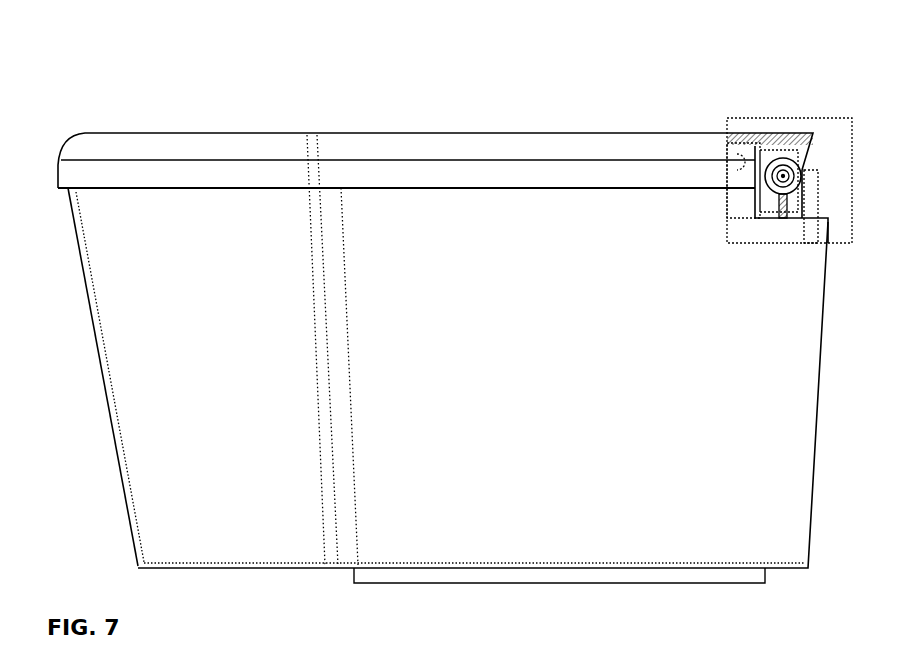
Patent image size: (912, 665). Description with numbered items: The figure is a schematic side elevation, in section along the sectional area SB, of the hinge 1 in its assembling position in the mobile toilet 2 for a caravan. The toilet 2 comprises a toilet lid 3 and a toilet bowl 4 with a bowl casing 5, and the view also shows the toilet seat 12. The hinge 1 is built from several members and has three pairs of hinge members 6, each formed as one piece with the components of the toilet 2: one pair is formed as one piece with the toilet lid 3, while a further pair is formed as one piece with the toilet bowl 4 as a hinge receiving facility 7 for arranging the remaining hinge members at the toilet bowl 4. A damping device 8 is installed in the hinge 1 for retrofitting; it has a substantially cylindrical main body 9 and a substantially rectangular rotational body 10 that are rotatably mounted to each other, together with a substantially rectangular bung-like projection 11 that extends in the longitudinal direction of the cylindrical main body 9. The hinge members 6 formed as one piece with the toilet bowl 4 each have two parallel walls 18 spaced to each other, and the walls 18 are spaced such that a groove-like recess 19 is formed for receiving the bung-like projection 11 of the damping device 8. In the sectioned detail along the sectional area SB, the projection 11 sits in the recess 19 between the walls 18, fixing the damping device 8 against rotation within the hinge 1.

The hinge 1 is at (820, 105).
The mobile toilet 2 is at (86, 364).
The toilet lid 3 is at (303, 148).
The toilet bowl 4 is at (810, 232).
The bowl casing 5 is at (127, 450).
The hinge members 6 is at (752, 162).
The hinge receiving facility 7 is at (762, 163).
The damping device 8 is at (796, 152).
The cylindrical main body 9 is at (790, 155).
The rotational body 10 is at (778, 162).
The bung-like projection 11 is at (776, 186).
The toilet seat 12 is at (783, 176).
The parallel walls 18 is at (778, 200).
The groove-like recess 19 is at (770, 210).
The sectional area SB is at (797, 168).